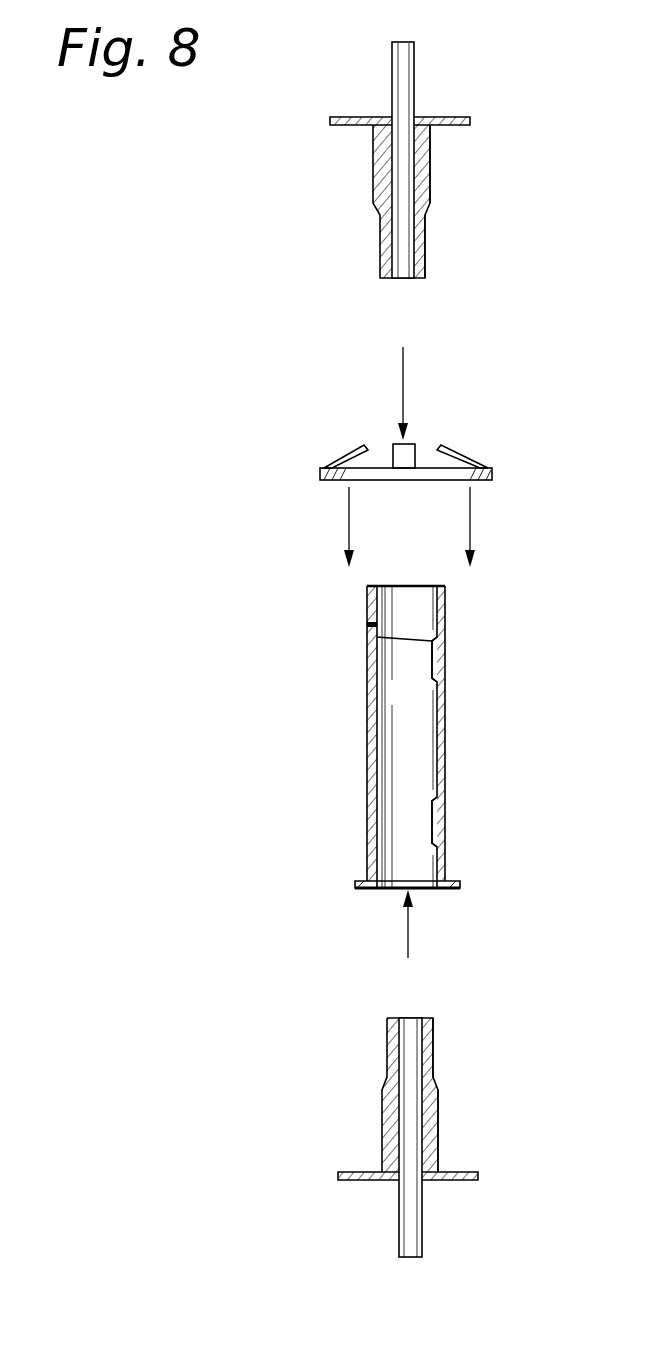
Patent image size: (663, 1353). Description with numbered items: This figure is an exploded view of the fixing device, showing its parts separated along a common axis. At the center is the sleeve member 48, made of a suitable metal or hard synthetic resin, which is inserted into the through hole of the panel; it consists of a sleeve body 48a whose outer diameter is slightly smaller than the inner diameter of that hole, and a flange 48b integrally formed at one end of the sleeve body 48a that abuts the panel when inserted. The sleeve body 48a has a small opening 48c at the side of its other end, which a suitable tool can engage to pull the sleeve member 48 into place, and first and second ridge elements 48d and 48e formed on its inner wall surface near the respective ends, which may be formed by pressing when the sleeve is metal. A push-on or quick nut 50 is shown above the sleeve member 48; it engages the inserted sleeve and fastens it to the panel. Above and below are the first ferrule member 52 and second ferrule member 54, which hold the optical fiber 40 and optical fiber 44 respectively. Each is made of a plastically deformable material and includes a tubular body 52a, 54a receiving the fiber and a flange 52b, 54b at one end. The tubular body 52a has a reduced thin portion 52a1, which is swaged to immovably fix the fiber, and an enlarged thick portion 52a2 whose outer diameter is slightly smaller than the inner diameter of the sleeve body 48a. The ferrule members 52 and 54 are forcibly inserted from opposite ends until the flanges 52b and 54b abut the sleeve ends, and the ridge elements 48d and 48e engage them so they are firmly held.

The optical fiber 40 is at (414, 74).
The optical fiber 44 is at (422, 1222).
The sleeve member 48 is at (397, 760).
The sleeve body 48a is at (447, 695).
The flange 48b is at (457, 888).
The small opening 48c is at (367, 633).
The first ridge element 48d is at (432, 652).
The second ridge element 48e is at (432, 824).
The push-on or quick nut 50 is at (467, 457).
The first ferrule member 52 is at (411, 180).
The tubular body 52a is at (373, 183).
The reduced thin portion 52a1 is at (425, 257).
The enlarged thick portion 52a2 is at (430, 152).
The flange 52b is at (452, 117).
The second ferrule member 54 is at (406, 1133).
The tubular body 54a is at (382, 1110).
The flange 54b is at (365, 1182).